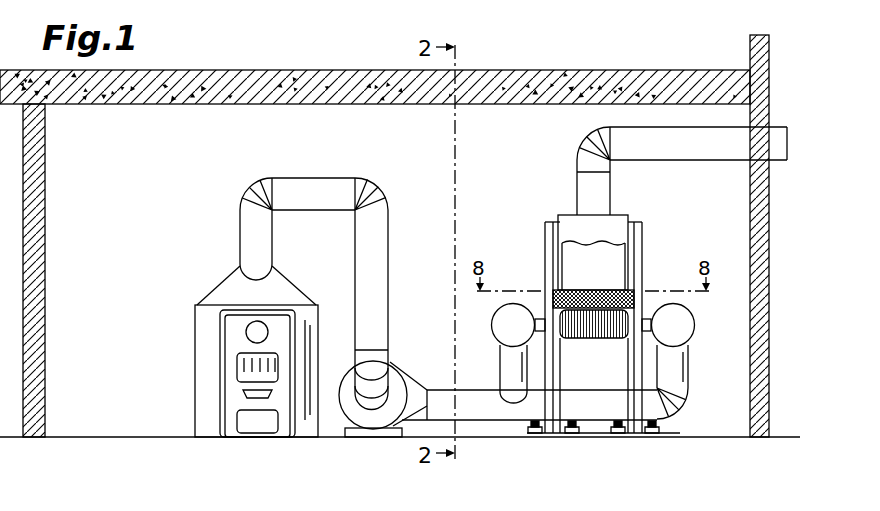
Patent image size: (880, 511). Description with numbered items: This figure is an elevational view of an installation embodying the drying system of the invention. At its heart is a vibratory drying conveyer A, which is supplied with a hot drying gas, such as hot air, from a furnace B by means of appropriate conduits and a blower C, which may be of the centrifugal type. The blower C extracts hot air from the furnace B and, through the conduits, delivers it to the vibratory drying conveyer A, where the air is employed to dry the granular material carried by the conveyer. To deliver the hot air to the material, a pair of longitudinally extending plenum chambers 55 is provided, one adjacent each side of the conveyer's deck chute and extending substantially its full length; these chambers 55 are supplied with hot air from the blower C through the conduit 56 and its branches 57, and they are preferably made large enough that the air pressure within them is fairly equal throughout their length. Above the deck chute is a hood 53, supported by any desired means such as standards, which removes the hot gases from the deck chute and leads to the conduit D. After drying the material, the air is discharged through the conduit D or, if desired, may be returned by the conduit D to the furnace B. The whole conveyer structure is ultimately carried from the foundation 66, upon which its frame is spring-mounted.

The vibratory drying conveyer A is at (601, 296).
The furnace B is at (183, 317).
The blower C is at (414, 357).
The conduit D is at (715, 150).
The hood 53 is at (570, 228).
The plenum chambers 55 is at (506, 333).
The conduit 56 is at (567, 412).
The branches 57 is at (512, 369).
The foundation 66 is at (708, 435).